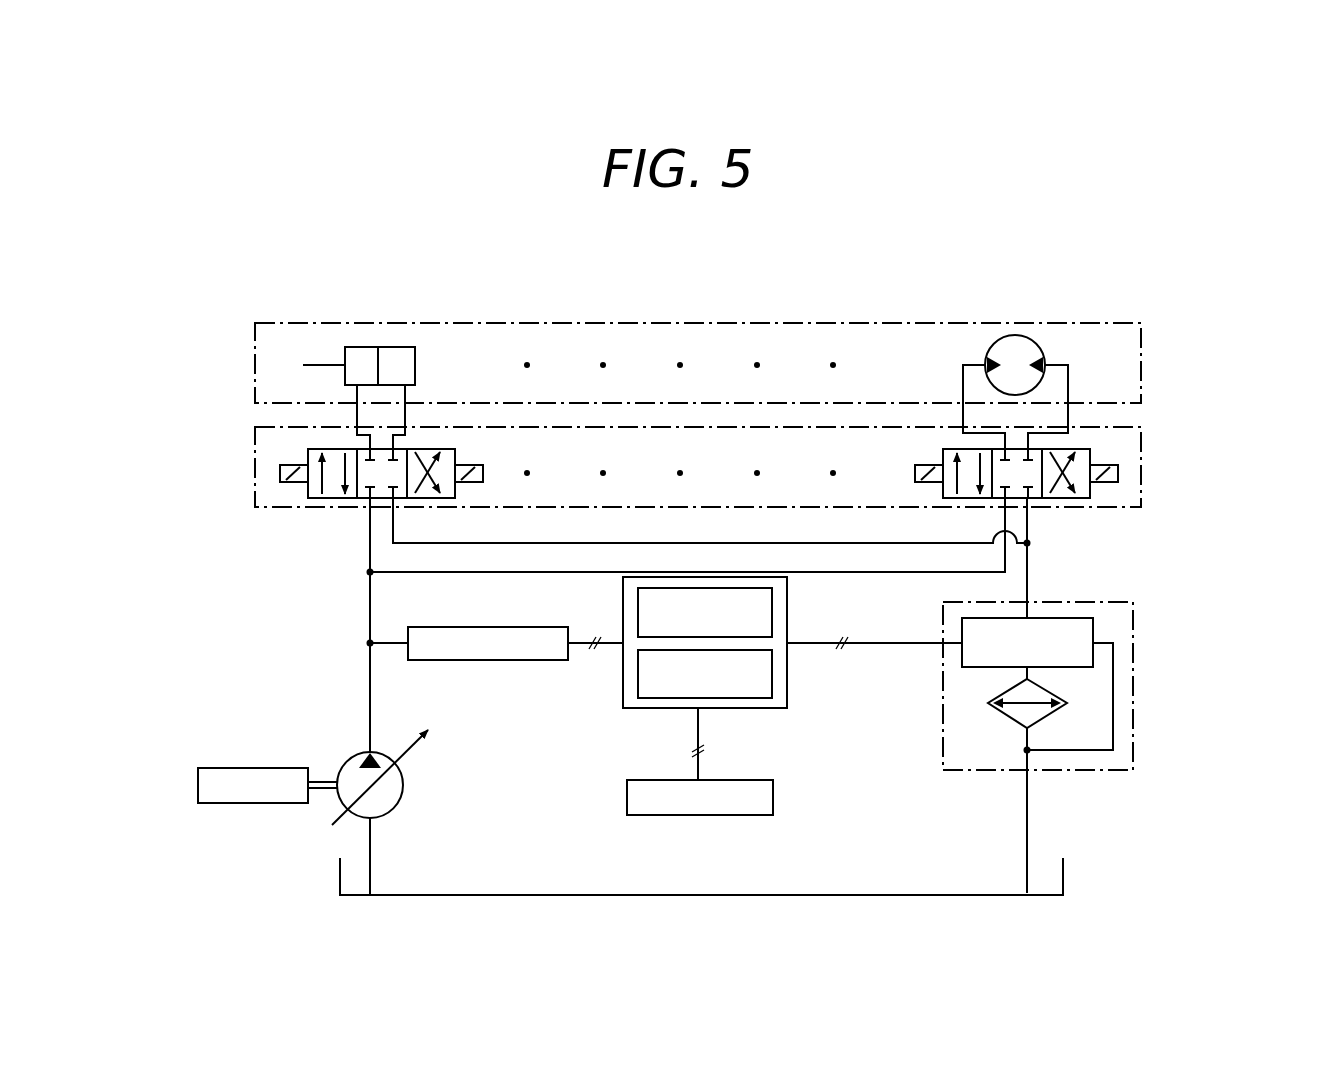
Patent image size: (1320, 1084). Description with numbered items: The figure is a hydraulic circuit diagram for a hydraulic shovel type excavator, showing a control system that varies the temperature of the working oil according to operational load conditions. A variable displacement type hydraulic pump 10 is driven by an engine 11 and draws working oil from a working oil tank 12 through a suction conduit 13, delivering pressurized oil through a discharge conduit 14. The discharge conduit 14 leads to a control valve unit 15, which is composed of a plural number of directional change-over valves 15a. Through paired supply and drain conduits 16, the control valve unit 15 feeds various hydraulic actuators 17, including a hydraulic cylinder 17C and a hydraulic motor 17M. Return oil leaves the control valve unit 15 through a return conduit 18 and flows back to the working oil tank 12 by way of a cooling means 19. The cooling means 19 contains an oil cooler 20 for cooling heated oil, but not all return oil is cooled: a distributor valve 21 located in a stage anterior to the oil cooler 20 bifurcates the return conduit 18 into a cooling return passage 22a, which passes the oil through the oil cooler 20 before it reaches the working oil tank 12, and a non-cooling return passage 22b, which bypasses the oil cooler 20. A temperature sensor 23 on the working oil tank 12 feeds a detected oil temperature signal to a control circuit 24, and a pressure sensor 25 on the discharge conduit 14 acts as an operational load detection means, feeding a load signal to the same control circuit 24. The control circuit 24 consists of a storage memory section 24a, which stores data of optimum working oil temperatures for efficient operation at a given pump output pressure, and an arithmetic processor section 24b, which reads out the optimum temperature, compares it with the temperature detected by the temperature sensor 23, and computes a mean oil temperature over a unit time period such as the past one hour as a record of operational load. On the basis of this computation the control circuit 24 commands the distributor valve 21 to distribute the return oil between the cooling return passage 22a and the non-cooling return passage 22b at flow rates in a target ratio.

The hydraulic pump 10 is at (402, 805).
The engine 11 is at (198, 768).
The working oil tank 12 is at (338, 876).
The suction conduit 13 is at (370, 868).
The discharge conduit 14 is at (370, 667).
The control valve unit 15 is at (1141, 455).
The directional change-over valve 15a is at (308, 492).
The supply and drain conduits 16 is at (357, 398).
The hydraulic actuator 17 is at (1141, 350).
The hydraulic cylinder 17C is at (398, 345).
The hydraulic motor 17M is at (1015, 335).
The return conduit 18 is at (1030, 572).
The cooling means 19 is at (1125, 770).
The oil cooler 20 is at (1003, 717).
The distributor valve 21 is at (1093, 630).
The cooling return passage 22a is at (1020, 672).
The non-cooling return passage 22b is at (1113, 700).
The temperature sensor 23 is at (733, 815).
The control circuit 24 is at (732, 678).
The storage memory section 24a is at (763, 682).
The arithmetic processor section 24b is at (772, 615).
The pressure sensor 25 is at (408, 627).